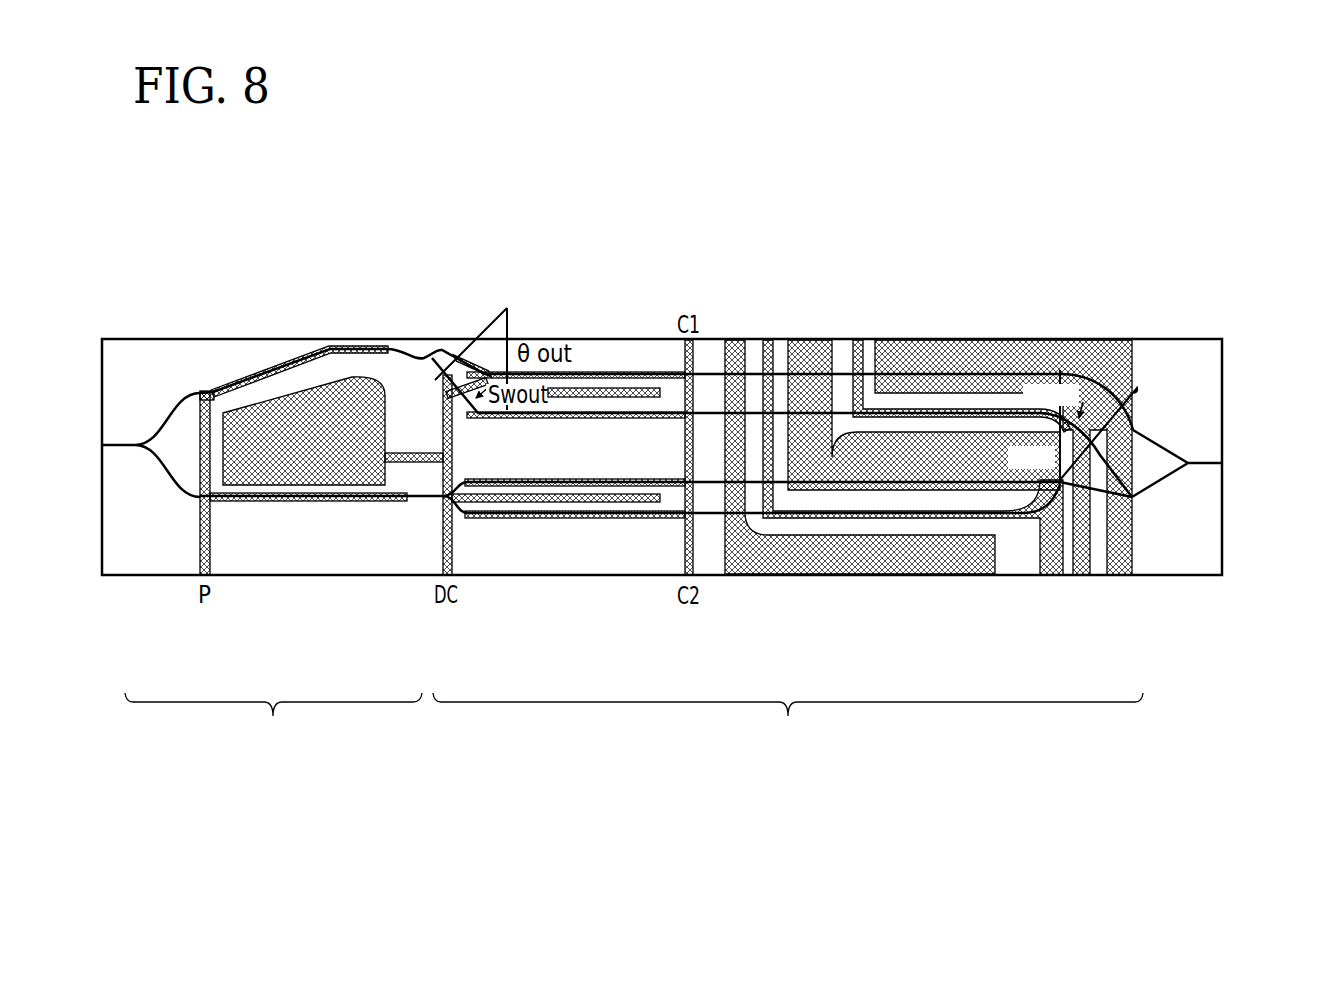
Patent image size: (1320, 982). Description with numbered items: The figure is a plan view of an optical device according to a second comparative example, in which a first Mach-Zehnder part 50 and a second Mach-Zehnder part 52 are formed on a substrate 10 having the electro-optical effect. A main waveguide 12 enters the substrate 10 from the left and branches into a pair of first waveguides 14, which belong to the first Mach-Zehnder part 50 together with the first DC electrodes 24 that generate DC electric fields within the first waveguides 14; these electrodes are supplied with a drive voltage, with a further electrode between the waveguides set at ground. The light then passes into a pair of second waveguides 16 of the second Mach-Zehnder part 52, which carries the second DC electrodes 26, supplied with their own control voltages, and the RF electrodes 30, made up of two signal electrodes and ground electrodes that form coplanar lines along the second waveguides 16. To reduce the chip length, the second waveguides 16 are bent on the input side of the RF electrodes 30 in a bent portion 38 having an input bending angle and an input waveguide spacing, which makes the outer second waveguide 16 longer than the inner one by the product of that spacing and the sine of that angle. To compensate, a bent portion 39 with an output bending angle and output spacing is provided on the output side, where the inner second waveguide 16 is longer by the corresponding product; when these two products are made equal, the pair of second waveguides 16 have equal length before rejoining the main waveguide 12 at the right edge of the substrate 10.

The substrate 10 is at (1222, 500).
The main waveguide 12 is at (113, 444).
The first waveguides 14 is at (275, 372).
The second waveguides 16 is at (622, 362).
The first DC electrodes 24 is at (227, 390).
The second DC electrodes 26 is at (563, 398).
The RF electrodes 30 is at (898, 339).
The bent portion 38 is at (1068, 352).
The bent portion 39 is at (503, 438).
The first Mach-Zehnder part 50 is at (273, 722).
The second Mach-Zehnder part 52 is at (788, 722).